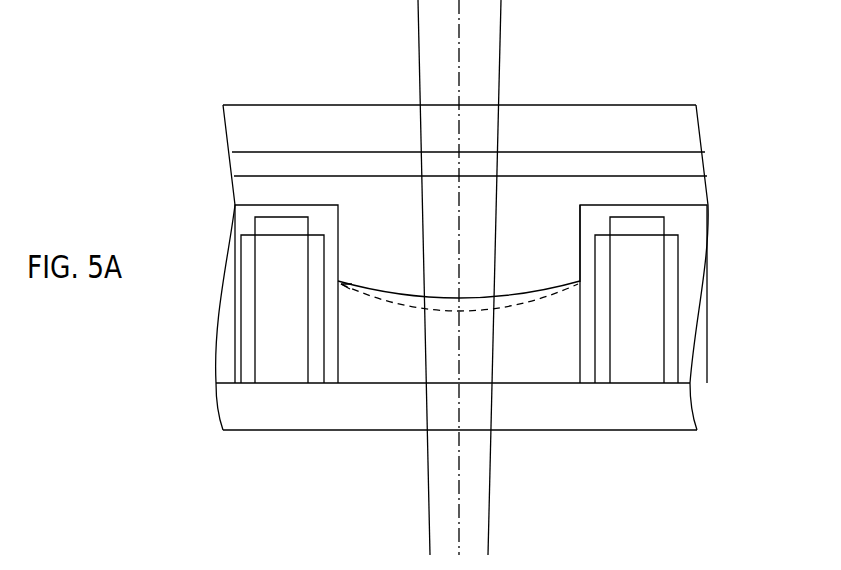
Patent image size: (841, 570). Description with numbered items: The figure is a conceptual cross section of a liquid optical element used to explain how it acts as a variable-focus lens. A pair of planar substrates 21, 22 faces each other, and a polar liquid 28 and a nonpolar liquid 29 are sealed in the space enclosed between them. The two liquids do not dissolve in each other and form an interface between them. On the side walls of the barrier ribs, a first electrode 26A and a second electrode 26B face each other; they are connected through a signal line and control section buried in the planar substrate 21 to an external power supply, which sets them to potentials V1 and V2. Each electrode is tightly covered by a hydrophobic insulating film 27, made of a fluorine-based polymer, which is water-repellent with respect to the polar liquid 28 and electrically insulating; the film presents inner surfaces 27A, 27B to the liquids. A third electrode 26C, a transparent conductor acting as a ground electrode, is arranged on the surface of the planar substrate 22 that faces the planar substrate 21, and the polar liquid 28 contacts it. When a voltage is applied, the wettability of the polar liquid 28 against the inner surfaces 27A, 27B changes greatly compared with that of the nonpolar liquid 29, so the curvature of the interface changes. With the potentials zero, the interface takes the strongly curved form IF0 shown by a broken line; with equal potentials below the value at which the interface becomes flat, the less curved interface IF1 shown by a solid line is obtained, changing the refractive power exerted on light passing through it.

The planar substrate 21 is at (657, 418).
The planar substrate 22 is at (262, 113).
The first electrode 26A is at (317, 368).
The second electrode 26B is at (603, 368).
The third electrode 26C is at (620, 167).
The hydrophobic insulating film 27 is at (673, 213).
The inner surface 27A is at (338, 247).
The inner surface 27B is at (580, 246).
The polar liquid 28 is at (523, 267).
The nonpolar liquid 29 is at (368, 353).
The interface IF1 is at (395, 293).
The interface IF0 is at (410, 306).